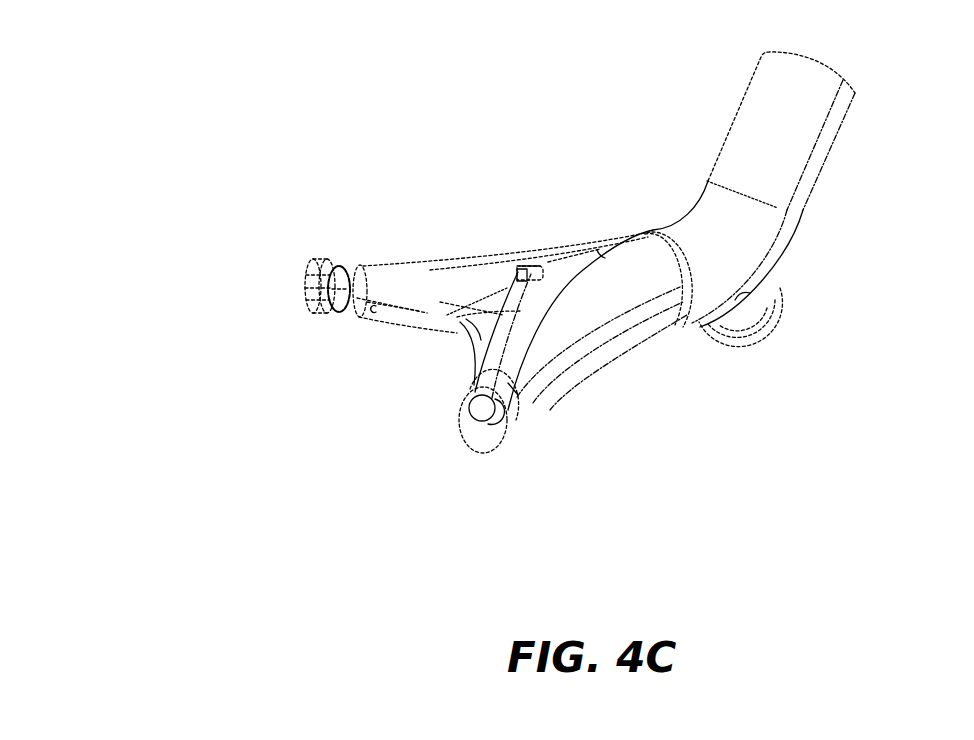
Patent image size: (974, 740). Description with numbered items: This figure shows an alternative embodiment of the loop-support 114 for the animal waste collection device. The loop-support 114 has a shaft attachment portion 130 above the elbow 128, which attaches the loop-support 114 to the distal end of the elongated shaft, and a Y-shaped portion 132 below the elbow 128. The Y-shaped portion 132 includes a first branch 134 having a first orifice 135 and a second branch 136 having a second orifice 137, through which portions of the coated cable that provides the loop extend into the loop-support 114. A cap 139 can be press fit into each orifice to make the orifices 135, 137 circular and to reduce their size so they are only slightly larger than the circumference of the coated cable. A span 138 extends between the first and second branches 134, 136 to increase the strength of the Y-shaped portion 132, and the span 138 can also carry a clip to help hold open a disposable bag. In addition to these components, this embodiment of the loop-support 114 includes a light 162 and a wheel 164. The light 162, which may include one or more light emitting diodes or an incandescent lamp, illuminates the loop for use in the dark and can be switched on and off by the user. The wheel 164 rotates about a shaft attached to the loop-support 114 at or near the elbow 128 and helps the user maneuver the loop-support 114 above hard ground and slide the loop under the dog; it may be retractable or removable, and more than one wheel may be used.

The loop-support 114 is at (581, 107).
The elbow 128 is at (775, 279).
The shaft attachment portion 130 is at (804, 189).
The Y-shaped portion 132 is at (412, 212).
The first branch 134 is at (451, 271).
The first orifice 135 is at (283, 293).
The second branch 136 is at (581, 341).
The second orifice 137 is at (484, 431).
The span 138 is at (418, 369).
The cap 139 is at (496, 436).
The light 162 is at (481, 206).
The wheel 164 is at (795, 360).